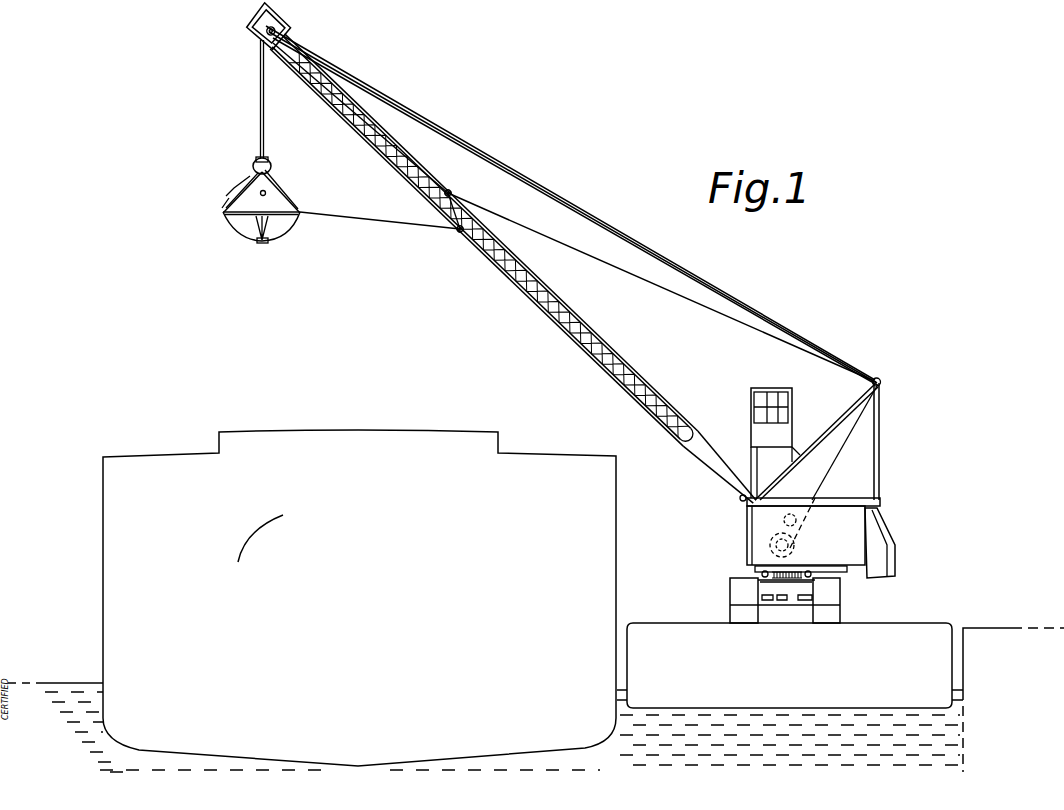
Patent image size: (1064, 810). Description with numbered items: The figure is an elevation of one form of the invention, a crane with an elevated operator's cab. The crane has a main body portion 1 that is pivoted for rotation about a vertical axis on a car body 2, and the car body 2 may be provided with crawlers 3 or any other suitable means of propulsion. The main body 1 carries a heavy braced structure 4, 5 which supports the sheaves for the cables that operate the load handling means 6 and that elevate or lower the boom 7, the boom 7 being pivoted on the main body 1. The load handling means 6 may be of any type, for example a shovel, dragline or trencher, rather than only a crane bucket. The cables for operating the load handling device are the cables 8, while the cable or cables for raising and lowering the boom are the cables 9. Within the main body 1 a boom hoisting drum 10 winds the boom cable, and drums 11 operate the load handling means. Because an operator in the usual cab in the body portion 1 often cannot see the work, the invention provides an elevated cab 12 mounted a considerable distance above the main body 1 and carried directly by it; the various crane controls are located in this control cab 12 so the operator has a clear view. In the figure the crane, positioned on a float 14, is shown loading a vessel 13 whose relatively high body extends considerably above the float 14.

The main body portion 1 is at (850, 529).
The car body 2 is at (773, 586).
The crawlers 3 is at (840, 597).
The braced structure 4 is at (840, 413).
The braced structure 5 is at (880, 442).
The load handling means 6 is at (290, 217).
The boom 7 is at (508, 284).
The cables for operating the load handling device 8 is at (393, 92).
The cable for raising and lowering the boom 9 is at (356, 72).
The boom hoisting drum 10 is at (786, 514).
The drums for operating the load handling means 11 is at (793, 548).
The elevated cab 12 is at (762, 389).
The vessel 13 is at (448, 425).
The float 14 is at (930, 620).